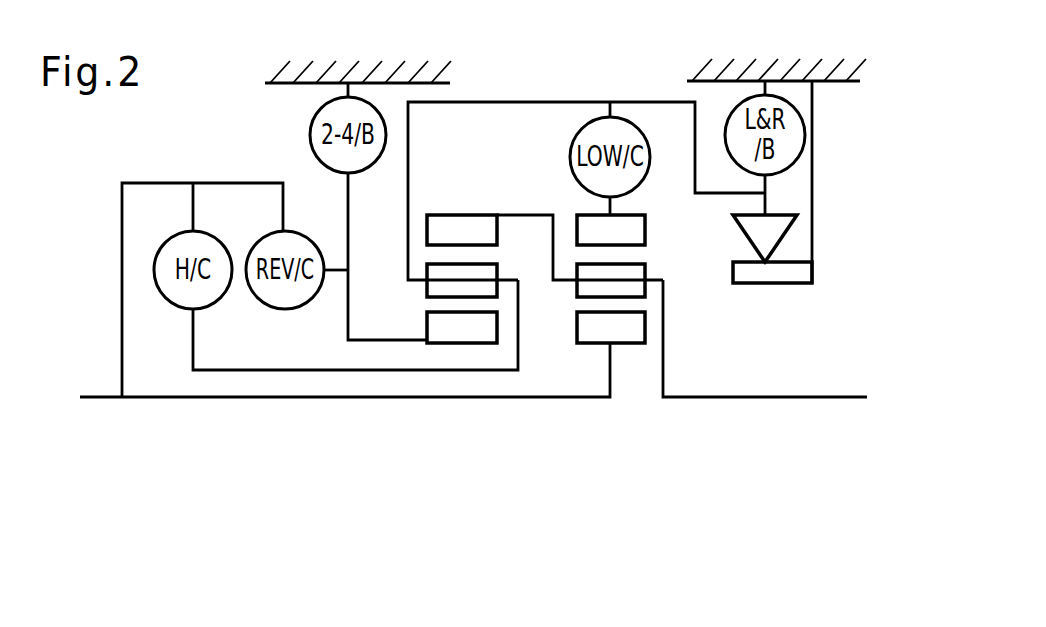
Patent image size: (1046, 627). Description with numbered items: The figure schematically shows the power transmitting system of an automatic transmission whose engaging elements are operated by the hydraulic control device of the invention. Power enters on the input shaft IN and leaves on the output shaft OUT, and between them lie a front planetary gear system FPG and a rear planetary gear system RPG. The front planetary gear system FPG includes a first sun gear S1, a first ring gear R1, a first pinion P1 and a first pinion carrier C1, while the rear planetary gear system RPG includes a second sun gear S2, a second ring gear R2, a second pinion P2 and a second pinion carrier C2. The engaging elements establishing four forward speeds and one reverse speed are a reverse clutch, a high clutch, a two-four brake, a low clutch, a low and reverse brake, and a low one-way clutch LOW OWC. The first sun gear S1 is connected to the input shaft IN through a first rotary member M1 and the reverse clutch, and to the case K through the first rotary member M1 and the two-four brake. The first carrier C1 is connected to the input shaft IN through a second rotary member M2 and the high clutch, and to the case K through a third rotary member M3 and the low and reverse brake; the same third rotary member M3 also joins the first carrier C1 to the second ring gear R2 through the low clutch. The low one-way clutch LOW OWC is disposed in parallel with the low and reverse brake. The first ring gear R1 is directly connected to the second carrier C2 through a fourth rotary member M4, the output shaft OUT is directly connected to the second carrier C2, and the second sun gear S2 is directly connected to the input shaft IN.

The case K is at (432, 83).
The first rotary member M1 is at (387, 259).
The second rotary member M2 is at (355, 329).
The third rotary member M3 is at (586, 191).
The fourth rotary member M4 is at (537, 232).
The first ring gear R1 is at (462, 231).
The first pinion P1 is at (485, 263).
The first pinion carrier C1 is at (515, 279).
The first sun gear S1 is at (462, 329).
The second ring gear R2 is at (611, 231).
The second pinion P2 is at (640, 263).
The second pinion carrier C2 is at (662, 279).
The second sun gear S2 is at (611, 329).
The front planetary gear system FPG is at (464, 418).
The rear planetary gear system RPG is at (607, 418).
The input shaft IN is at (345, 372).
The output shaft OUT is at (765, 339).
The low one-way clutch LOW is at (795, 238).
The low one-way clutch OWC is at (801, 185).